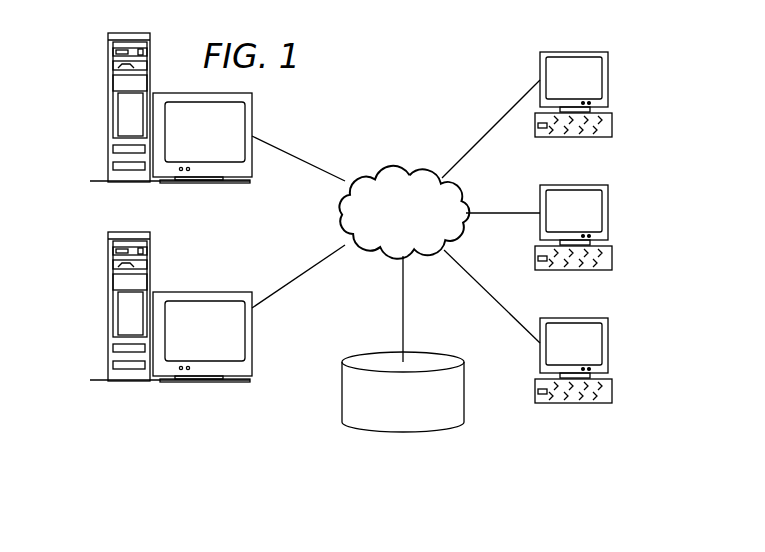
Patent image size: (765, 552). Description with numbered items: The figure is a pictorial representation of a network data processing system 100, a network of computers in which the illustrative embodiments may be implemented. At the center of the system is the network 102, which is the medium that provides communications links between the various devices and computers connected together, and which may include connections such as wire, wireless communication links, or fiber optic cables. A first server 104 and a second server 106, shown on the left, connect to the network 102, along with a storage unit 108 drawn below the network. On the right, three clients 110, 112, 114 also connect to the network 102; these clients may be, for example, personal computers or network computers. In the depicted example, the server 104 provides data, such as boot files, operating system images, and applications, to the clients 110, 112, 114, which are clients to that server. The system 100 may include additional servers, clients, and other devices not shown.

The network data processing system 100 is at (456, 54).
The network 102 is at (375, 172).
The server 104 is at (108, 110).
The server 106 is at (108, 309).
The storage unit 108 is at (388, 432).
The client 110 is at (610, 78).
The client 112 is at (610, 214).
The client 114 is at (610, 346).